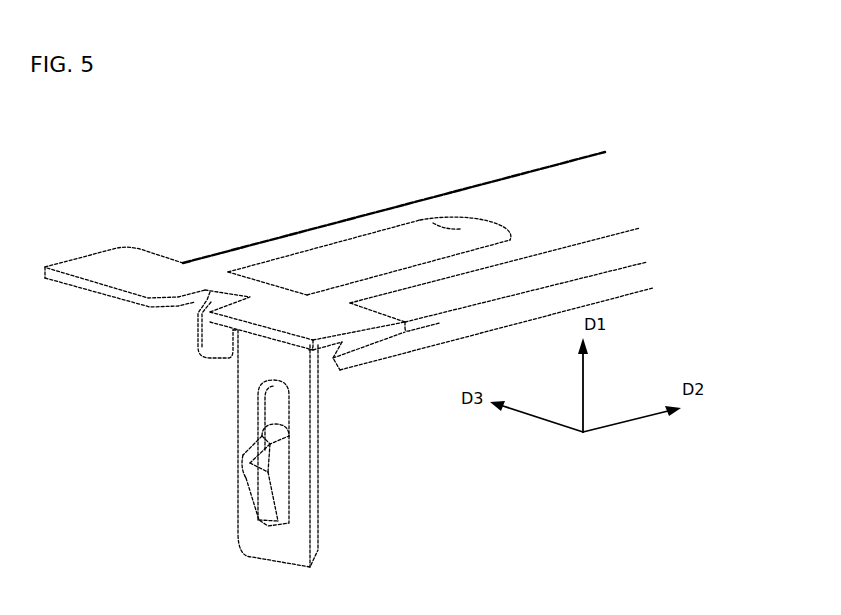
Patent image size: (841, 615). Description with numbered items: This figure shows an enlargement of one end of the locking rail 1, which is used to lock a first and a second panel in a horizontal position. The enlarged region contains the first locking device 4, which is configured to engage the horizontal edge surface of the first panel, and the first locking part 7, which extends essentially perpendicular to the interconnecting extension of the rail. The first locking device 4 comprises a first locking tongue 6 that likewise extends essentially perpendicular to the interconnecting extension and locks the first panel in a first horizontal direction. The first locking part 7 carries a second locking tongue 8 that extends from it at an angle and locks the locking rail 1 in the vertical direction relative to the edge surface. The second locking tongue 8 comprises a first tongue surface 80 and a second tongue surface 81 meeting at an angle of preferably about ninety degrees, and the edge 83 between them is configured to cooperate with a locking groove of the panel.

The locking rail 1 is at (492, 103).
The first locking device 4 is at (240, 224).
The first locking tongue 6 is at (208, 335).
The first locking part 7 is at (283, 370).
The second locking tongue 8 is at (276, 472).
The first tongue surface 80 is at (262, 500).
The second tongue surface 81 is at (273, 432).
The edge 83 is at (252, 458).